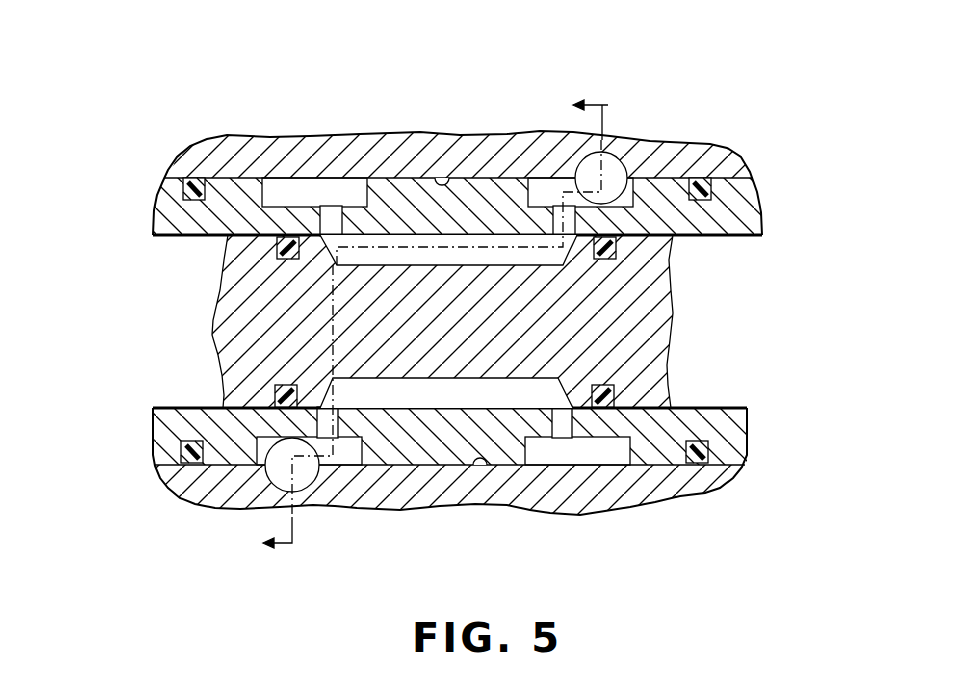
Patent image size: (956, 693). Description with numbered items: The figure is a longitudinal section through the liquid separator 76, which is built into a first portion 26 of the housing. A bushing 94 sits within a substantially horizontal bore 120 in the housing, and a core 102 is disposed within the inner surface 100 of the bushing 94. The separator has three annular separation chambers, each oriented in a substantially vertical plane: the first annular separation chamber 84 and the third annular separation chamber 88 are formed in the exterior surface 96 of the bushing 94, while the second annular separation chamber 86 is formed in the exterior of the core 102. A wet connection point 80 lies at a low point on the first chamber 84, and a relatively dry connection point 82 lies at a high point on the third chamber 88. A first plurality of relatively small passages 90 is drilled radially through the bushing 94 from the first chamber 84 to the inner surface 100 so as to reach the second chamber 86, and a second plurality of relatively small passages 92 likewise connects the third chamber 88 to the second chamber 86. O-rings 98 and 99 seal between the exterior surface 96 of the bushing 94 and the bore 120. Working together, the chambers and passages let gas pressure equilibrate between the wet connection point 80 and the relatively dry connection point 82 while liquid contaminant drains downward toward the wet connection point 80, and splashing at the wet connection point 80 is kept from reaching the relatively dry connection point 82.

The liquid separator 76 is at (140, 139).
The exterior surface of bushing 96 is at (228, 182).
The first annular separation chamber 84 is at (280, 190).
The first plurality of relatively small passages 90 is at (330, 212).
The substantially horizontal bore 120 is at (443, 183).
The third annular separation chamber 88 is at (543, 188).
The relatively dry connection point 82 is at (620, 172).
The O-ring 99 is at (185, 188).
The bushing 94 is at (745, 192).
The inner surface of bushing 100 is at (170, 236).
The second plurality of relatively small passages 92 is at (555, 220).
The core 102 is at (660, 315).
The O-ring 98 is at (287, 384).
The second annular separation chamber 86 is at (462, 392).
The wet connection point 80 is at (272, 470).
The first portion of housing 26 is at (640, 490).